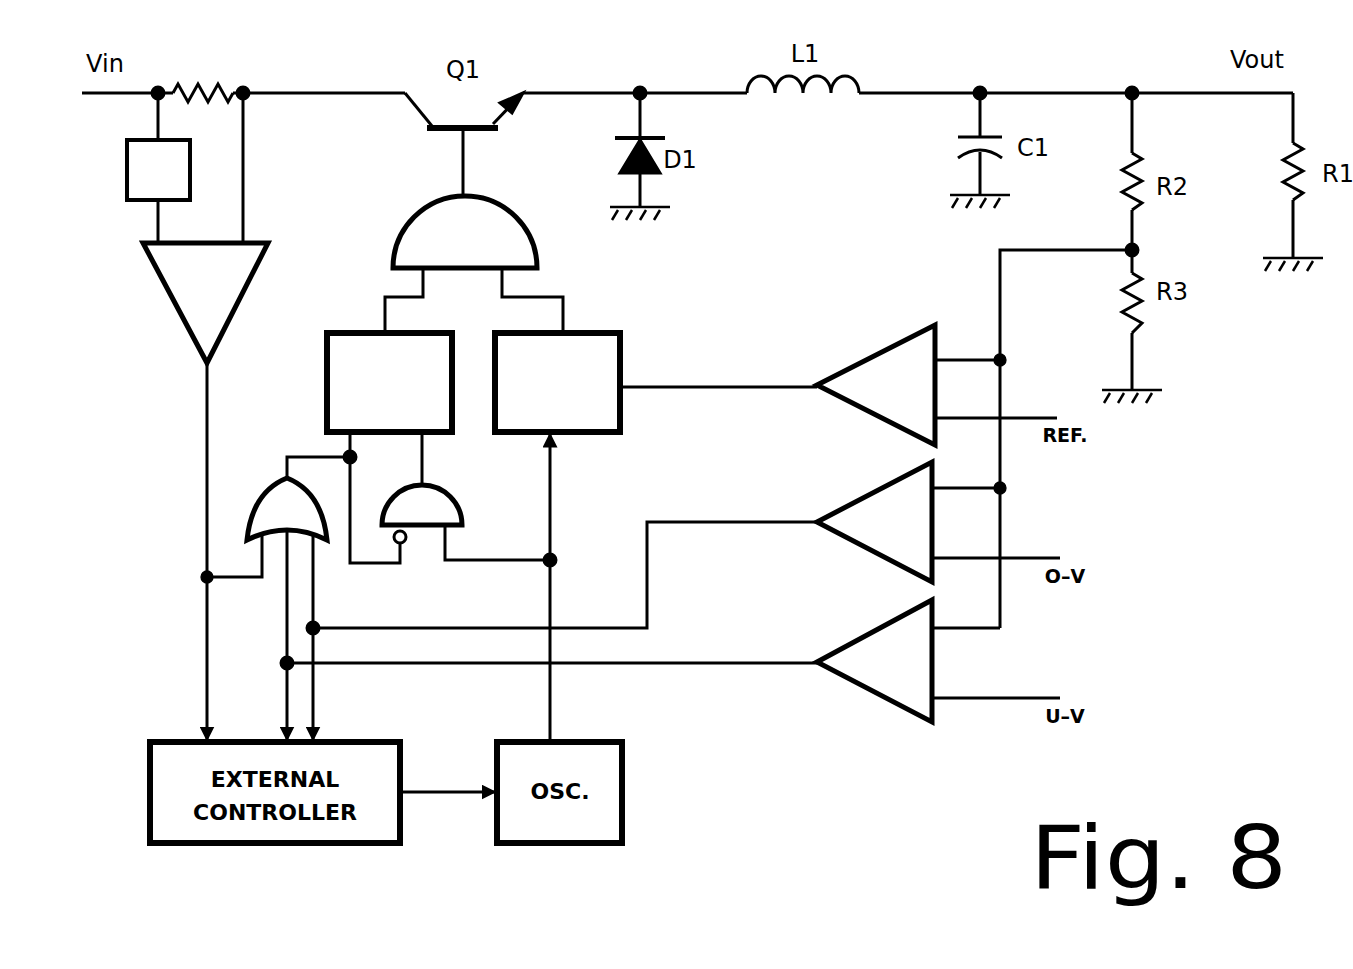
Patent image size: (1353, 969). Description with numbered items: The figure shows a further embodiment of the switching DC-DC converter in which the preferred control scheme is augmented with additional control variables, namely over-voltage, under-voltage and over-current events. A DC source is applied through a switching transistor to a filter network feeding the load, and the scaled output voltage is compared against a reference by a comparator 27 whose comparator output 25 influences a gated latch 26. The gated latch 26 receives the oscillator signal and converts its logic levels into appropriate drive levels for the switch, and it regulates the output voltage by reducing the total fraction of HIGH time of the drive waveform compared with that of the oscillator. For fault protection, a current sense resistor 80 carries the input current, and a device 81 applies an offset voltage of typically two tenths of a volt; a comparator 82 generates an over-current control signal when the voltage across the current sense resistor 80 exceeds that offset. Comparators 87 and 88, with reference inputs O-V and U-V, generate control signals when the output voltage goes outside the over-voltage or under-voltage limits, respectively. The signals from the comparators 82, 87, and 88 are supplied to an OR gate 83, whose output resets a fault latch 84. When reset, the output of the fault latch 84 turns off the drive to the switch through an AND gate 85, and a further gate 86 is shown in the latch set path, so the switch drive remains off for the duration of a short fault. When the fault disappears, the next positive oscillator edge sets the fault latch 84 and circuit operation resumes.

The current sense resistor 80 is at (203, 77).
The offset voltage device 81 is at (142, 168).
The comparator 82 is at (204, 303).
The OR gate 83 is at (252, 514).
The fault latch 84 is at (372, 382).
The AND gate 85 is at (470, 263).
The AND gate with inverted input 86 is at (466, 522).
The comparator 87 is at (938, 522).
The comparator 88 is at (938, 661).
The comparator output 25 is at (718, 373).
The gated latch 26 is at (563, 367).
The reference comparator 27 is at (937, 385).